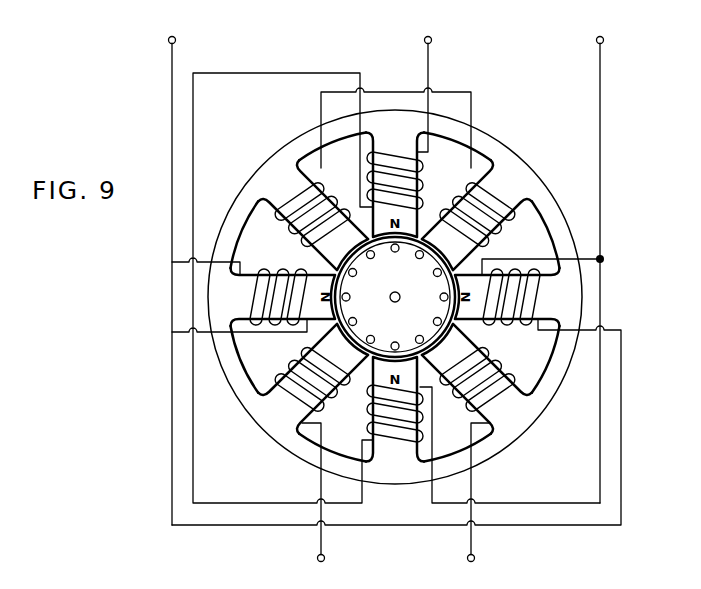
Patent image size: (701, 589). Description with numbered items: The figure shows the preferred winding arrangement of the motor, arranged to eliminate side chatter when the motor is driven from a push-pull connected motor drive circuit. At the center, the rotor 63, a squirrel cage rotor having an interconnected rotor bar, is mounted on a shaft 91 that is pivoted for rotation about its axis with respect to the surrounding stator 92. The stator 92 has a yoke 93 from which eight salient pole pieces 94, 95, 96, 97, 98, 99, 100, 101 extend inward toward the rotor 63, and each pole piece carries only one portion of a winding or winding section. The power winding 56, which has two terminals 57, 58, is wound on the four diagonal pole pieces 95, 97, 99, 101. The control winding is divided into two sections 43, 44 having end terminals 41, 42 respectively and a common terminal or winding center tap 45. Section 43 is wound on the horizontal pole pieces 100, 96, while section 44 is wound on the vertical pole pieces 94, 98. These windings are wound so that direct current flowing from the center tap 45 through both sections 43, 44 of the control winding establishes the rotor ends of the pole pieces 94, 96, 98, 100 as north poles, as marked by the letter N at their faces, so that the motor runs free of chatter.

The end terminal 41 is at (170, 37).
The end terminal 42 is at (426, 37).
The common terminal or winding center tap 45 is at (598, 37).
The terminal 57 is at (317, 558).
The terminal 58 is at (475, 558).
The stator 92 is at (483, 133).
The yoke 93 is at (487, 152).
The pole piece 94 is at (392, 147).
The pole piece 95 is at (507, 183).
The pole piece 96 is at (537, 295).
The pole piece 97 is at (497, 393).
The pole piece 98 is at (397, 440).
The pole piece 99 is at (293, 407).
The pole piece 100 is at (262, 296).
The pole piece 101 is at (290, 190).
The control winding section 44 is at (420, 185).
The power winding 56 is at (340, 190).
The control winding section 43 is at (288, 268).
The rotor 63 is at (407, 278).
The shaft 91 is at (395, 303).